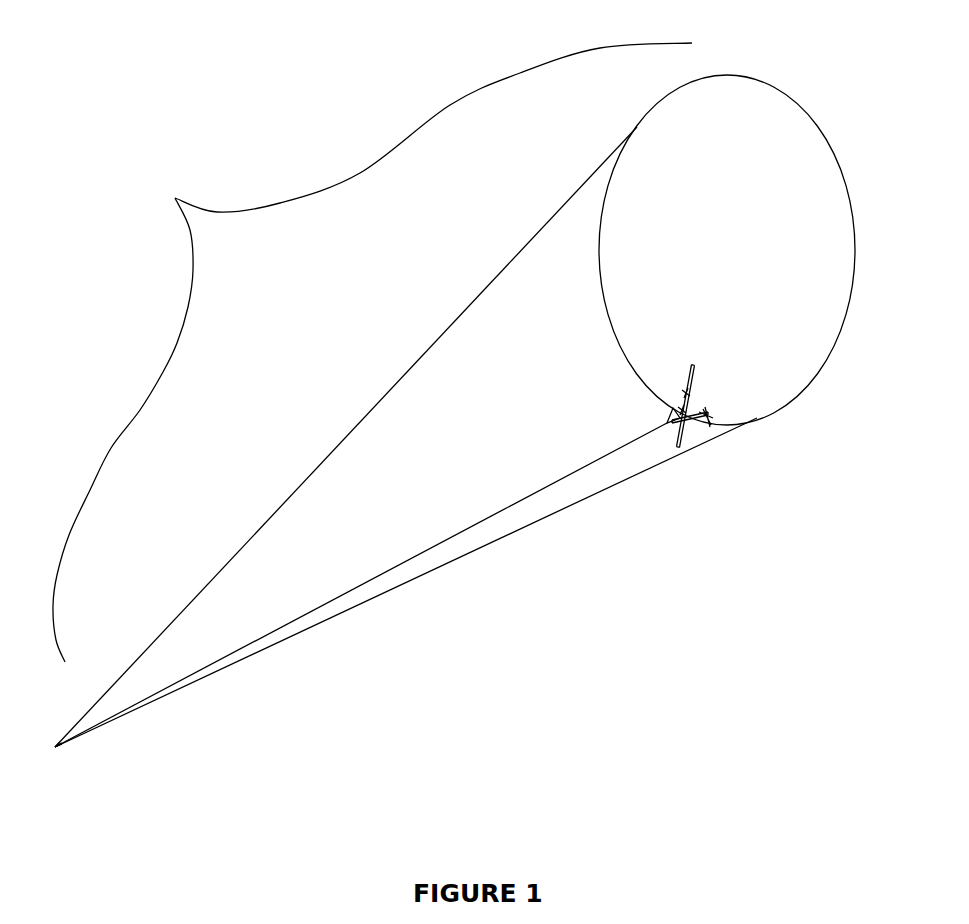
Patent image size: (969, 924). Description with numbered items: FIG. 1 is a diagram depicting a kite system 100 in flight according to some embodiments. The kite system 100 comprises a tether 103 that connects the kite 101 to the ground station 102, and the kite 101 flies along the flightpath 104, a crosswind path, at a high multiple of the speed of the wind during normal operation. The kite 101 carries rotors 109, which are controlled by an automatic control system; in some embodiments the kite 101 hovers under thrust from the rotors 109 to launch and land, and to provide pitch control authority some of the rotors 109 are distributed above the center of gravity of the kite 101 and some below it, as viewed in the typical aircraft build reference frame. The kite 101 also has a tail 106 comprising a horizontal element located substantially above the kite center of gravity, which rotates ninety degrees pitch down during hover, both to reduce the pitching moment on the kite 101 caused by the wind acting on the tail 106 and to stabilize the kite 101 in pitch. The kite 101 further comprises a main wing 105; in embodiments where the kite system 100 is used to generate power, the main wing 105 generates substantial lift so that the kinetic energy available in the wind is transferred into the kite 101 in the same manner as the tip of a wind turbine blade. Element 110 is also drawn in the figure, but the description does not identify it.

The kite system 100 is at (372, 352).
The kite 101 is at (703, 392).
The ground station 102 is at (72, 758).
The tether 103 is at (417, 563).
The flightpath 104 is at (593, 295).
The main wing 105 is at (690, 450).
The tail 106 is at (710, 423).
The rotors 109 is at (680, 382).
The tether attachment / bridle 110 is at (665, 435).